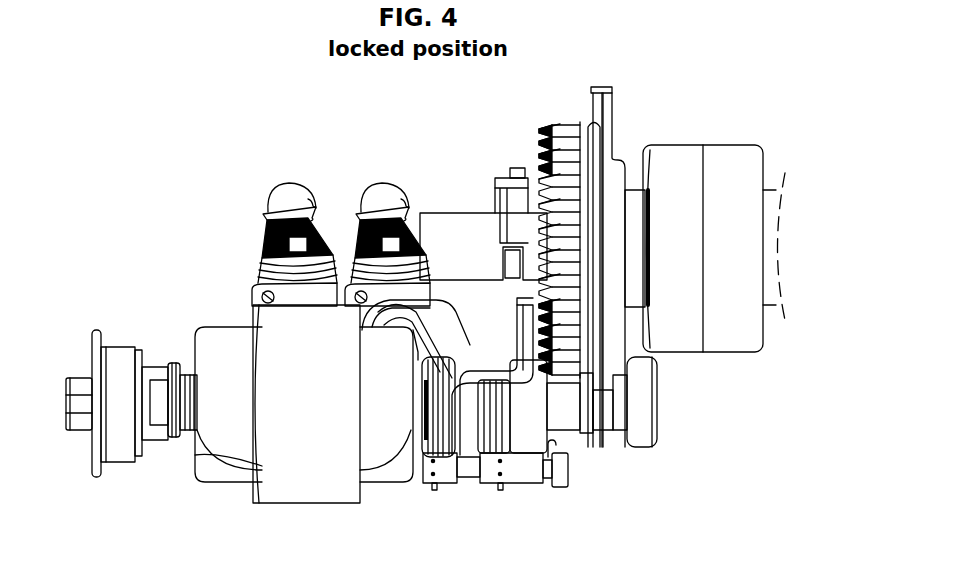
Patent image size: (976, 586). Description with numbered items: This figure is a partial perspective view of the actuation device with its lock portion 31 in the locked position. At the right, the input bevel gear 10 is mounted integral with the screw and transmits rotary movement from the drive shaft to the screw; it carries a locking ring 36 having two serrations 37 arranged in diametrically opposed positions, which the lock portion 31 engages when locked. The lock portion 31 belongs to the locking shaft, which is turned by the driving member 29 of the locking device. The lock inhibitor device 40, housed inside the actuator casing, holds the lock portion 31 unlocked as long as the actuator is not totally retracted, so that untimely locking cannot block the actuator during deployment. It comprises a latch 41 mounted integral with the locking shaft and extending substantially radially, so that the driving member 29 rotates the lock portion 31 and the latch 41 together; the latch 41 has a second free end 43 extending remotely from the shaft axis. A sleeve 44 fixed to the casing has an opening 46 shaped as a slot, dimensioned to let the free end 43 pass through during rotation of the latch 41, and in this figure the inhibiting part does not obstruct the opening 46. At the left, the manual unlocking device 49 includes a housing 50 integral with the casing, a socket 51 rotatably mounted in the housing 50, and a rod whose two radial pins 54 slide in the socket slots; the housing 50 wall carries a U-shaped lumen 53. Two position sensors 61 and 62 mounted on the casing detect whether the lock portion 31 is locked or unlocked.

The input bevel gear 10 is at (575, 128).
The driving member 29 is at (232, 430).
The lock portion 31 is at (601, 413).
The locking ring 36 is at (606, 134).
The serrations 37 is at (605, 98).
The lock inhibitor device 40 is at (451, 207).
The latch 41 is at (487, 358).
The second free end 43 is at (524, 320).
The sleeve 44 is at (467, 226).
The opening 46 is at (506, 274).
The manual unlocking device 49 is at (121, 413).
The housing 50 is at (118, 358).
The socket 51 is at (82, 421).
The lumen 53 is at (147, 378).
The pins 54 is at (162, 423).
The position sensor 61 is at (273, 212).
The position sensor 62 is at (362, 210).